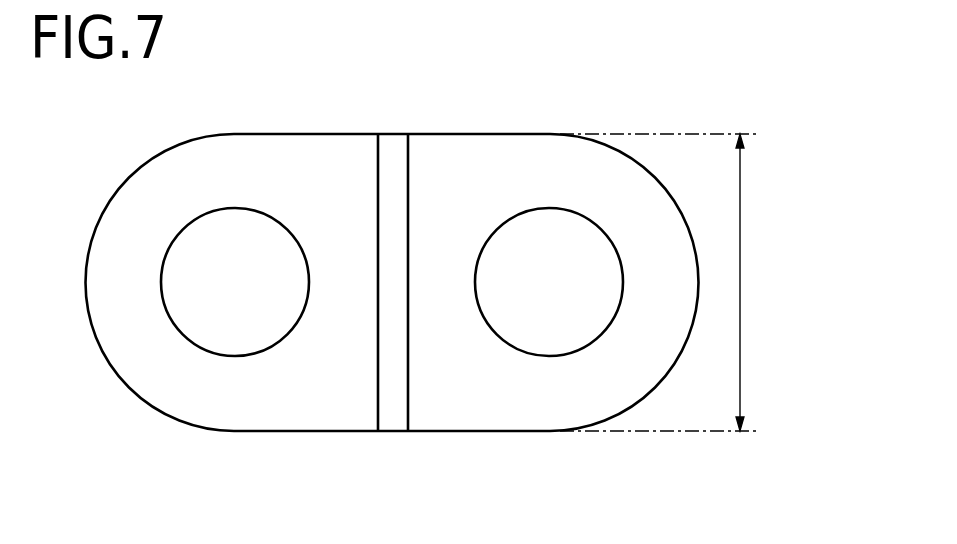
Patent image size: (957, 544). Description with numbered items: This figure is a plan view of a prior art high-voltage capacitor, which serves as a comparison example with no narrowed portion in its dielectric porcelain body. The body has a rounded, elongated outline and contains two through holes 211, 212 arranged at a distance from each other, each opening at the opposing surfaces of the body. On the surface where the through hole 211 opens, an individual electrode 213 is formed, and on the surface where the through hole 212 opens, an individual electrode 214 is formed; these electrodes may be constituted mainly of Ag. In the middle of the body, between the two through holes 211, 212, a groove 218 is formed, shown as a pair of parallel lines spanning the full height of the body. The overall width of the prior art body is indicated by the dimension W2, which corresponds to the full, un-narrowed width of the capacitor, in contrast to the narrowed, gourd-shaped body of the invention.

The through hole 211 is at (239, 340).
The through hole 212 is at (549, 342).
The individual electrode 213 is at (237, 160).
The individual electrode 214 is at (546, 160).
The groove 218 is at (390, 148).
The width W2 is at (740, 286).